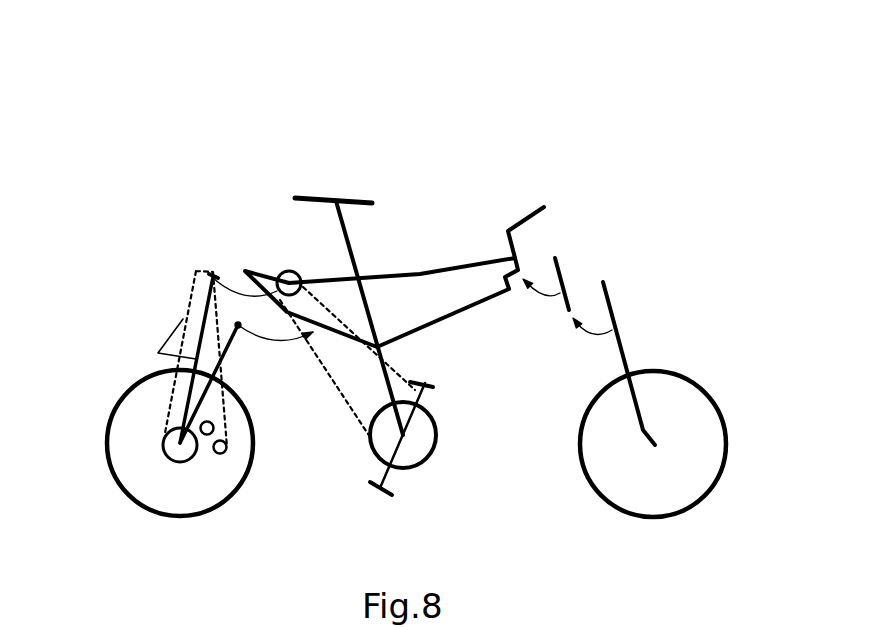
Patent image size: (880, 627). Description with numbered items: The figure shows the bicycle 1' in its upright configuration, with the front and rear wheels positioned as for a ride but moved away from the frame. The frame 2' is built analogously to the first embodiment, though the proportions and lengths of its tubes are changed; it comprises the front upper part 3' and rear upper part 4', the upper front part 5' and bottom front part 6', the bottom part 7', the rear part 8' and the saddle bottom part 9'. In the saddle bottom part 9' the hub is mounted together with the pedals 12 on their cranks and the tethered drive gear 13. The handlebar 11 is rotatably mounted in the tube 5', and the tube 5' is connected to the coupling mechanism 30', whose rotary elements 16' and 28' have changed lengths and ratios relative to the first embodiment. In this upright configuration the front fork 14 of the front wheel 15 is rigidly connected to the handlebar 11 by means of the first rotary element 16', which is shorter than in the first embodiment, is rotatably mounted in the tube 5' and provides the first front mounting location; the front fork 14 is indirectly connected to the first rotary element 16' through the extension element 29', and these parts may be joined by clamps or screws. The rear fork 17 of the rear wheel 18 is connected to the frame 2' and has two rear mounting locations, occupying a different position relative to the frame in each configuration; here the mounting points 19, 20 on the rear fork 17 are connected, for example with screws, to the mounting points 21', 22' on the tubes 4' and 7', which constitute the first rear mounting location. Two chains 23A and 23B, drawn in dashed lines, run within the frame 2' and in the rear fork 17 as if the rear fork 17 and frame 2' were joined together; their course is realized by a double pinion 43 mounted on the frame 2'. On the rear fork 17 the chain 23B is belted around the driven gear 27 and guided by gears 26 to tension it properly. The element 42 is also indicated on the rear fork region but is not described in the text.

The bicycle 1' is at (647, 153).
The frame 2' is at (509, 386).
The front upper part 3' is at (381, 188).
The rear upper part 4' is at (175, 152).
The upper front part 5' is at (630, 139).
The bottom front part 6' is at (496, 170).
The bottom part 7' is at (316, 383).
The rear part 8' is at (131, 171).
The saddle bottom part 9' is at (349, 232).
The handlebar 11 is at (525, 218).
The pedals 12 is at (372, 483).
The tethered drive gear 13 is at (412, 468).
The front fork 14 is at (614, 317).
The front wheel 15 is at (714, 402).
The first rotary element 16' is at (682, 188).
The rear fork 17 is at (193, 360).
The rear wheel 18 is at (107, 422).
The mounting point 19 is at (198, 271).
The mounting point 20 is at (238, 325).
The mounting point 21' is at (259, 151).
The mounting point 22' is at (339, 357).
The chain 23A is at (350, 410).
The chain 23B is at (287, 284).
The gears 26 is at (218, 450).
The driven gear 27 is at (162, 450).
The rotary element 28' is at (493, 443).
The extension element 29' is at (698, 220).
The coupling mechanism 30' is at (578, 424).
The bracket 42 is at (172, 333).
The double pinion 43 is at (281, 272).